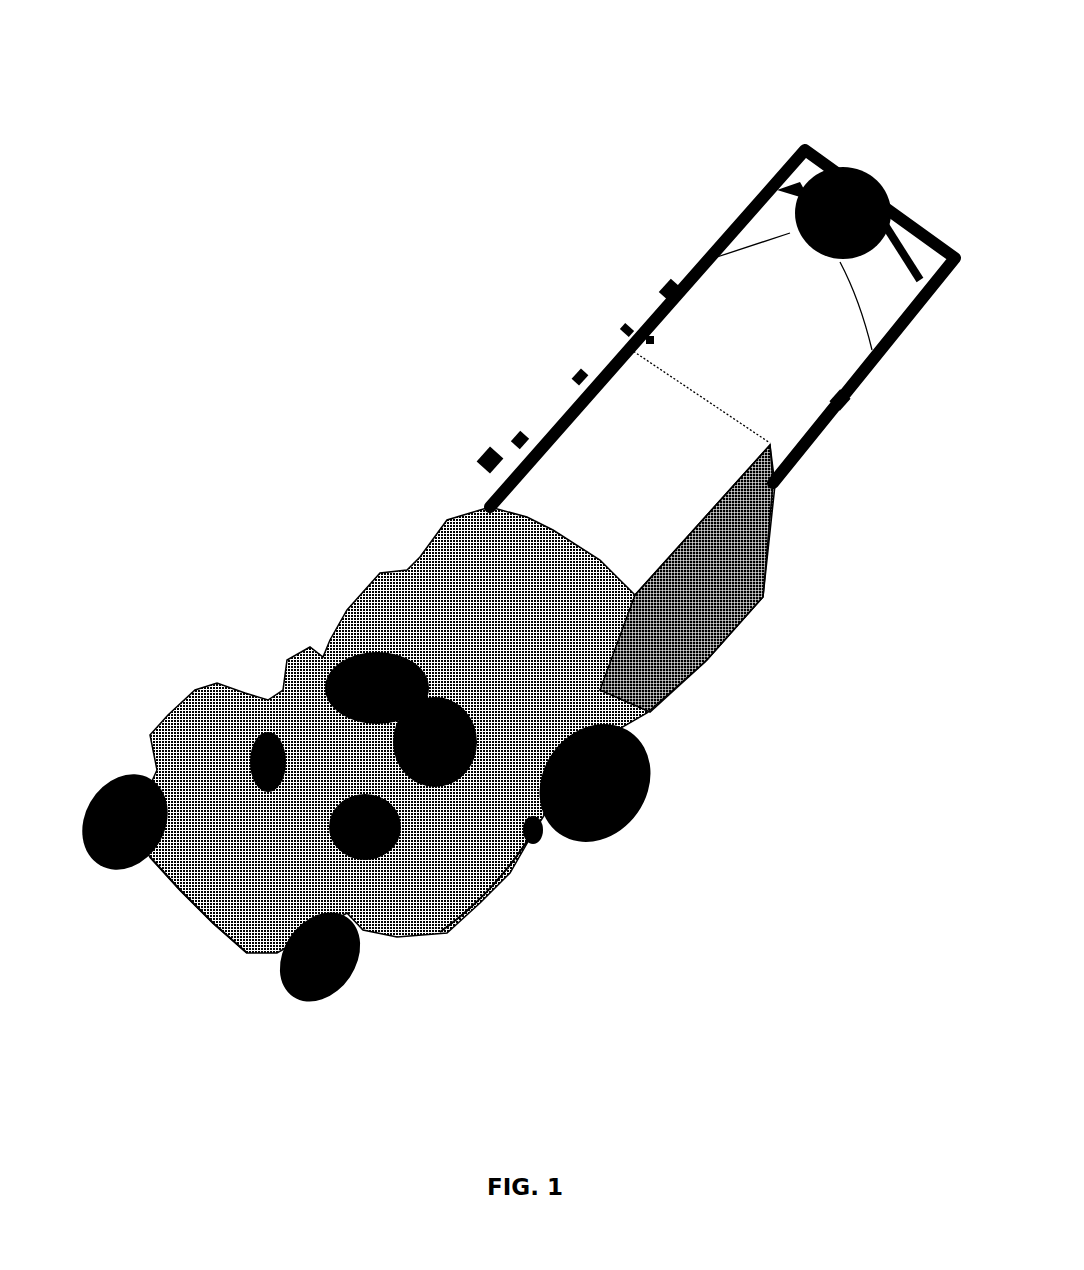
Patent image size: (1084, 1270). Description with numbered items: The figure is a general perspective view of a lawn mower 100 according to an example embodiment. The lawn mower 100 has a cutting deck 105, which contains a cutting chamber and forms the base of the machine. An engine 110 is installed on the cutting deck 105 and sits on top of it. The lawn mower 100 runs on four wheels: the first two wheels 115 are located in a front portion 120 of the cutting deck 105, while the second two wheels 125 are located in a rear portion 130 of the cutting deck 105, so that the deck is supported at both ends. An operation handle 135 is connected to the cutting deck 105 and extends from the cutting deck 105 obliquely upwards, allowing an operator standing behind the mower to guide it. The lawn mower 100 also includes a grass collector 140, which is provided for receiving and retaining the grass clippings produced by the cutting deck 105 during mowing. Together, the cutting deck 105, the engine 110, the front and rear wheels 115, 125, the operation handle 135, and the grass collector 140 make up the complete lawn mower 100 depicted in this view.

The lawn mower 100 is at (938, 48).
The cutting deck 105 is at (443, 928).
The engine 110 is at (503, 888).
The first two wheels 115 is at (107, 873).
The front portion 120 is at (213, 930).
The second two wheels 125 is at (650, 763).
The rear portion 130 is at (533, 835).
The operation handle 135 is at (800, 447).
The grass collector 140 is at (700, 660).